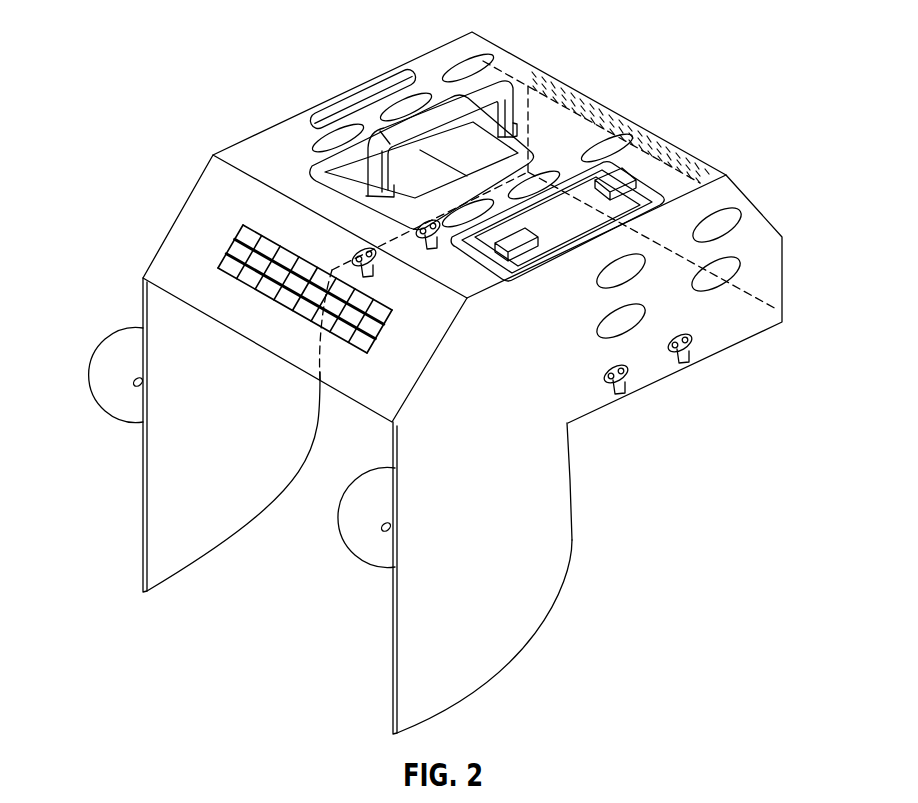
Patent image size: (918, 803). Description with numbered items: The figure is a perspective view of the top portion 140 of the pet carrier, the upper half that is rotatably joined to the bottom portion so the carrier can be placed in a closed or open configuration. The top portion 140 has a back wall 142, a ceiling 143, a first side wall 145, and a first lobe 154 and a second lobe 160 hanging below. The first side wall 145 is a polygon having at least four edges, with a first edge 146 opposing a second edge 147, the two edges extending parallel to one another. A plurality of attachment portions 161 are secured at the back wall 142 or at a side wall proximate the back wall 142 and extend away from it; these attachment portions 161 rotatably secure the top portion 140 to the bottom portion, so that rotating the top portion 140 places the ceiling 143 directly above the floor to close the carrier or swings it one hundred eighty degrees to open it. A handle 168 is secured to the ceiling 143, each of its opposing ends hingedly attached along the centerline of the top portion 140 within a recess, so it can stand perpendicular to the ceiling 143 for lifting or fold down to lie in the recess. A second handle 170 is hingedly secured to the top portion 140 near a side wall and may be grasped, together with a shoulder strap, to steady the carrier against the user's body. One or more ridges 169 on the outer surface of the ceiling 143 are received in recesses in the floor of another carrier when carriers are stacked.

The top portion 140 is at (243, 93).
The back wall 142 is at (172, 214).
The ceiling 143 is at (362, 73).
The first side wall 145 is at (698, 377).
The first edge 146 is at (693, 191).
The second edge 147 is at (577, 427).
The first lobe 154 is at (537, 584).
The second lobe 160 is at (129, 483).
The attachment portions 161 is at (96, 373).
The handle 168 is at (358, 100).
The ridges 169 is at (412, 73).
The second handle 170 is at (611, 176).